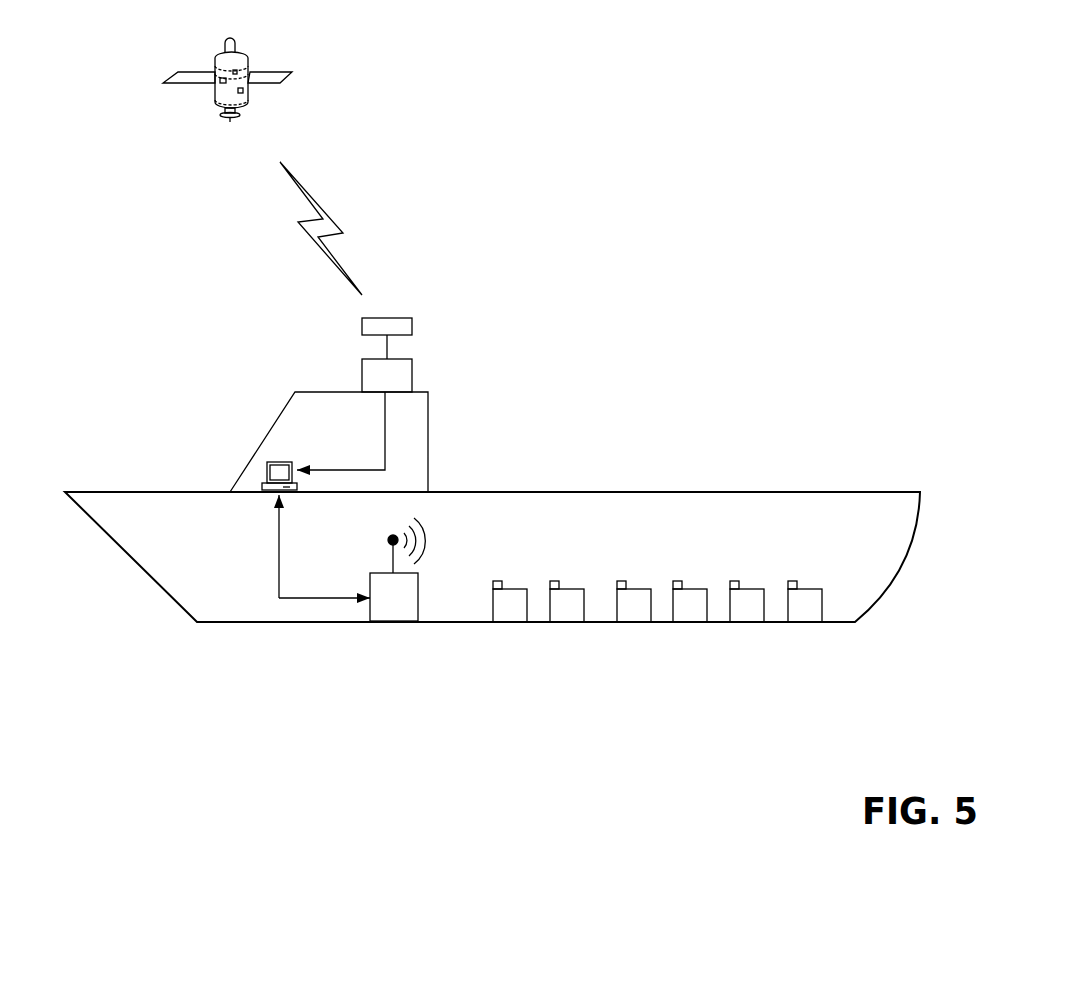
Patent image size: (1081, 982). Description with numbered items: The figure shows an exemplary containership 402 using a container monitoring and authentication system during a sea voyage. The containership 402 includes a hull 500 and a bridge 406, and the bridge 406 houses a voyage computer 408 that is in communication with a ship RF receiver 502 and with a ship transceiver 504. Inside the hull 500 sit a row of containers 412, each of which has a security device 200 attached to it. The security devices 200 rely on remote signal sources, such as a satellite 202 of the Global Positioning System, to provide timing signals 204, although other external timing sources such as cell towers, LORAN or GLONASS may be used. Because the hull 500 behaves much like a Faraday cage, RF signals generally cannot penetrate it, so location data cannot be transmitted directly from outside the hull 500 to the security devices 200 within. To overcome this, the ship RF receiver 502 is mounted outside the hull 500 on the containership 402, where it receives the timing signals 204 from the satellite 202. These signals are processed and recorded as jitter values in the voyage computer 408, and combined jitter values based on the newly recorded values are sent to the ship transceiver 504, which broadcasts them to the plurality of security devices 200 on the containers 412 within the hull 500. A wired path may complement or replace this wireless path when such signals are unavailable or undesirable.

The security device 200 is at (785, 580).
The satellite 202 is at (265, 55).
The timing signals 204 is at (330, 193).
The containership 402 is at (773, 208).
The bridge 406 is at (278, 415).
The voyage computer 408 is at (263, 468).
The container 412 is at (803, 623).
The hull 500 is at (912, 540).
The ship RF receiver 502 is at (413, 325).
The ship transceiver 504 is at (393, 625).